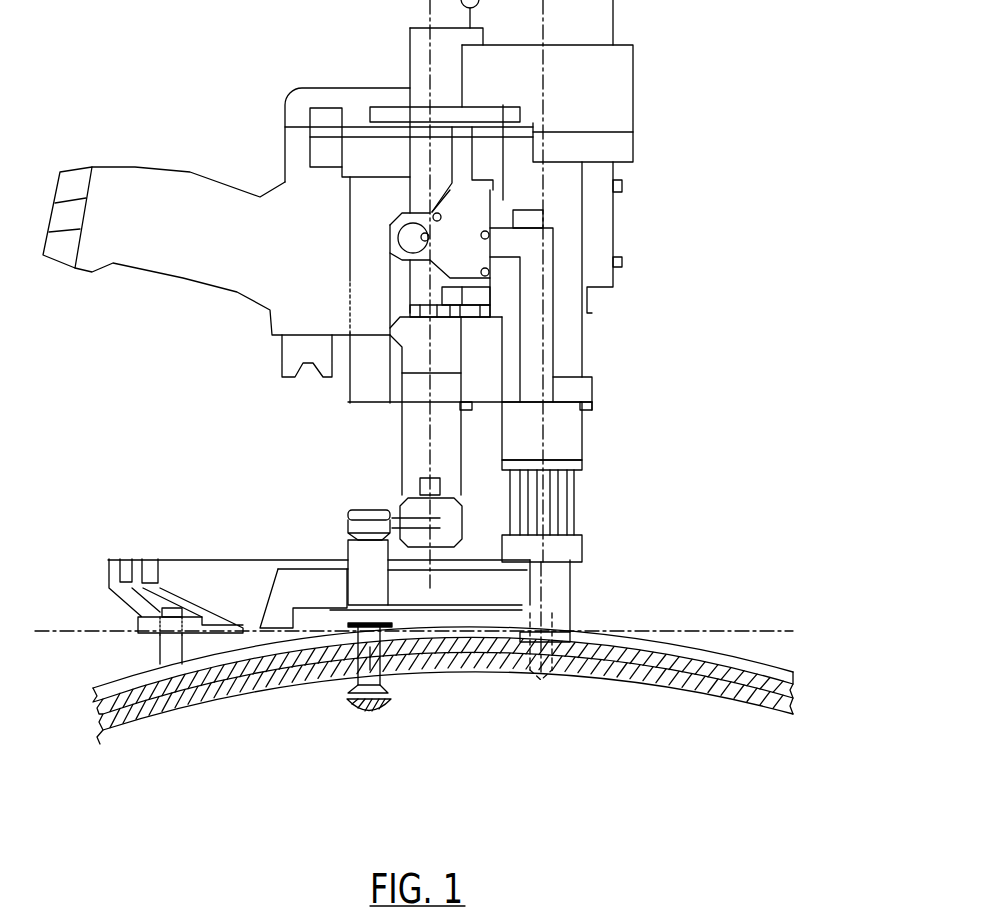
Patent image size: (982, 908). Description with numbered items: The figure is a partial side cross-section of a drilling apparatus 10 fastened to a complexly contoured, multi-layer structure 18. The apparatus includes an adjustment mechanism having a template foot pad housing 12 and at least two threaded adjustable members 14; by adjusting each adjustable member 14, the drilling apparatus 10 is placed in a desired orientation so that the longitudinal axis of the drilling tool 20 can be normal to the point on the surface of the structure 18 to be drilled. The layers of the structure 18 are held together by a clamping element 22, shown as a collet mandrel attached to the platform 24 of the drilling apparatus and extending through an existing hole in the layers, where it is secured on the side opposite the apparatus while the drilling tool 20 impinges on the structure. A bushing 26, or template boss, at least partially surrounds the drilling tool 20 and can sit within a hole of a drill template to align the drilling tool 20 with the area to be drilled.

The drilling apparatus 10 is at (672, 49).
The template foot pad housing 12 is at (132, 619).
The adjustable members 14 is at (150, 663).
The structure 18 is at (813, 665).
The drilling tool 20 is at (553, 697).
The clamping element 22 is at (373, 728).
The platform 24 is at (572, 582).
The bushing 26 is at (562, 650).